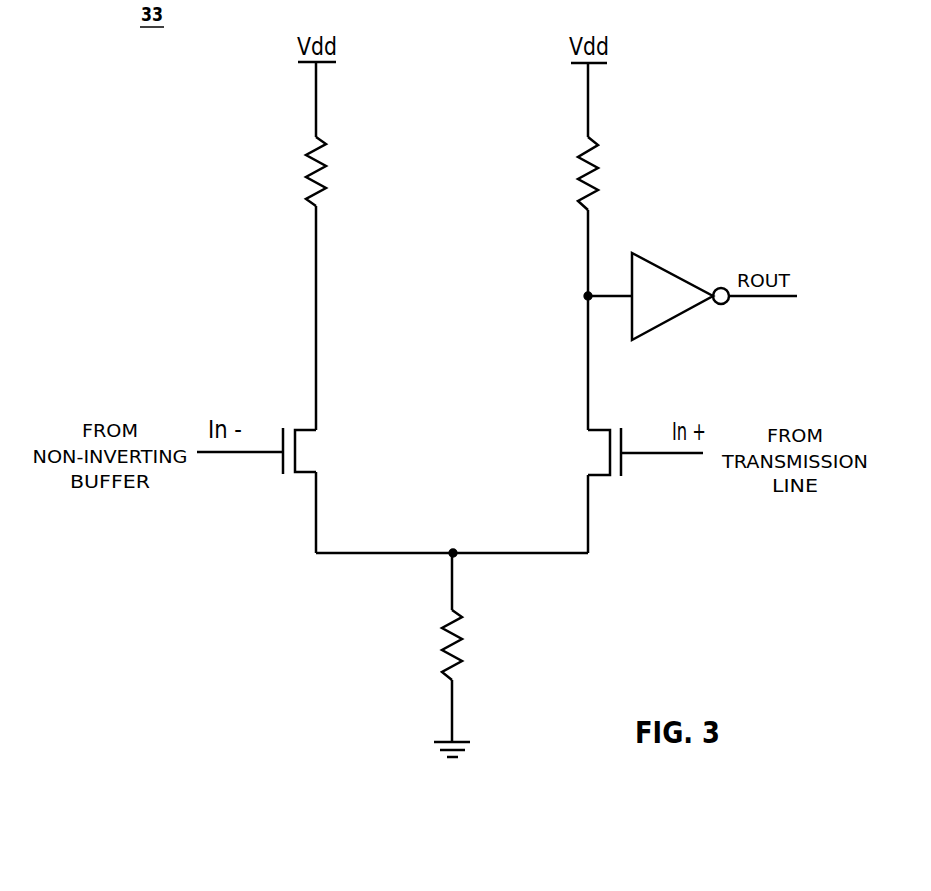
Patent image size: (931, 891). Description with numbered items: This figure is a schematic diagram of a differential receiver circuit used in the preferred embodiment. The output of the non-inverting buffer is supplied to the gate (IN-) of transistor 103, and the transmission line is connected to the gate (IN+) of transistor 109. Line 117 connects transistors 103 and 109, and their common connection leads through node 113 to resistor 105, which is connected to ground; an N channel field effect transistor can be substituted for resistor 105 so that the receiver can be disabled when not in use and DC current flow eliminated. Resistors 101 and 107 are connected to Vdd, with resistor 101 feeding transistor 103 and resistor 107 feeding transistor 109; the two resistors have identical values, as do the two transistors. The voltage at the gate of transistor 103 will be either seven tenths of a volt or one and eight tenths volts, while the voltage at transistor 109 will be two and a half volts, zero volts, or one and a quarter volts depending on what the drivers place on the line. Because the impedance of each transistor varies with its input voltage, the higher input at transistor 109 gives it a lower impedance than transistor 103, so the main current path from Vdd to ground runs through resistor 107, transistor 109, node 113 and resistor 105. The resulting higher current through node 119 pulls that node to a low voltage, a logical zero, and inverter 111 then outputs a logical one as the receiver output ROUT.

The resistor 101 is at (300, 163).
The transistor 103 is at (303, 452).
The resistor 105 is at (468, 653).
The resistor 107 is at (577, 163).
The transistor 109 is at (593, 450).
The inverter 111 is at (677, 305).
The node 113 is at (452, 552).
The line 117 is at (508, 552).
The node 119 is at (577, 297).